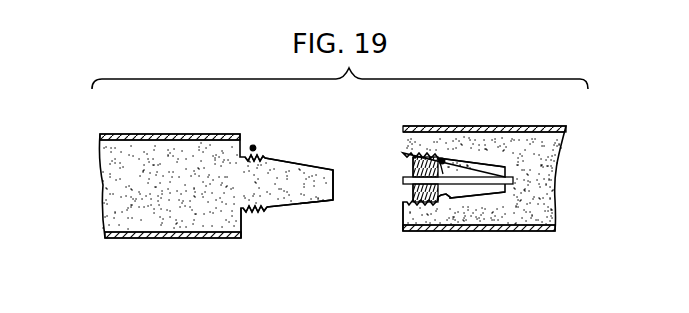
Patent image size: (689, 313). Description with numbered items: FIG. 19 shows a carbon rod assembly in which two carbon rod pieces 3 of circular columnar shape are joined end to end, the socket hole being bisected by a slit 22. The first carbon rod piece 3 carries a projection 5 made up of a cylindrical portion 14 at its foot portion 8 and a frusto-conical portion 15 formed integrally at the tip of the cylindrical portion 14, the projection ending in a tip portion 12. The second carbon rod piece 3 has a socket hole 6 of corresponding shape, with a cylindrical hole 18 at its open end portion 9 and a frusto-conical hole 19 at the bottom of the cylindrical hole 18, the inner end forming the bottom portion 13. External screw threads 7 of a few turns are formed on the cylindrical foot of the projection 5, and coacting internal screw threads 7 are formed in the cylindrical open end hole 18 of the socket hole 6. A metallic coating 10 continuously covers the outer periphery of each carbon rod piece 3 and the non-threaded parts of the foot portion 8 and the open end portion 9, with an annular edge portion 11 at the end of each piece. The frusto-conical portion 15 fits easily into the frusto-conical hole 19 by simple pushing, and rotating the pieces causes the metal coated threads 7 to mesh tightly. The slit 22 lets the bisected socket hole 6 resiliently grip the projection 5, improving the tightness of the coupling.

The carbon rod 3 is at (168, 152).
The projection 5 is at (292, 177).
The socket hole 6 is at (443, 162).
The screw threads 7 is at (263, 153).
The foot portion 8 is at (252, 145).
The open end portion 9 is at (403, 172).
The metallic coating 10 is at (168, 240).
The annular edge portion 11 is at (247, 242).
The tip portion 12 is at (335, 177).
The bottom portion 13 is at (513, 182).
The cylindrical portion 14 is at (275, 214).
The frusto-conical portion 15 is at (317, 207).
The cylindrical hole 18 is at (448, 200).
The frusto-conical hole 19 is at (478, 190).
The slit 22 is at (478, 175).